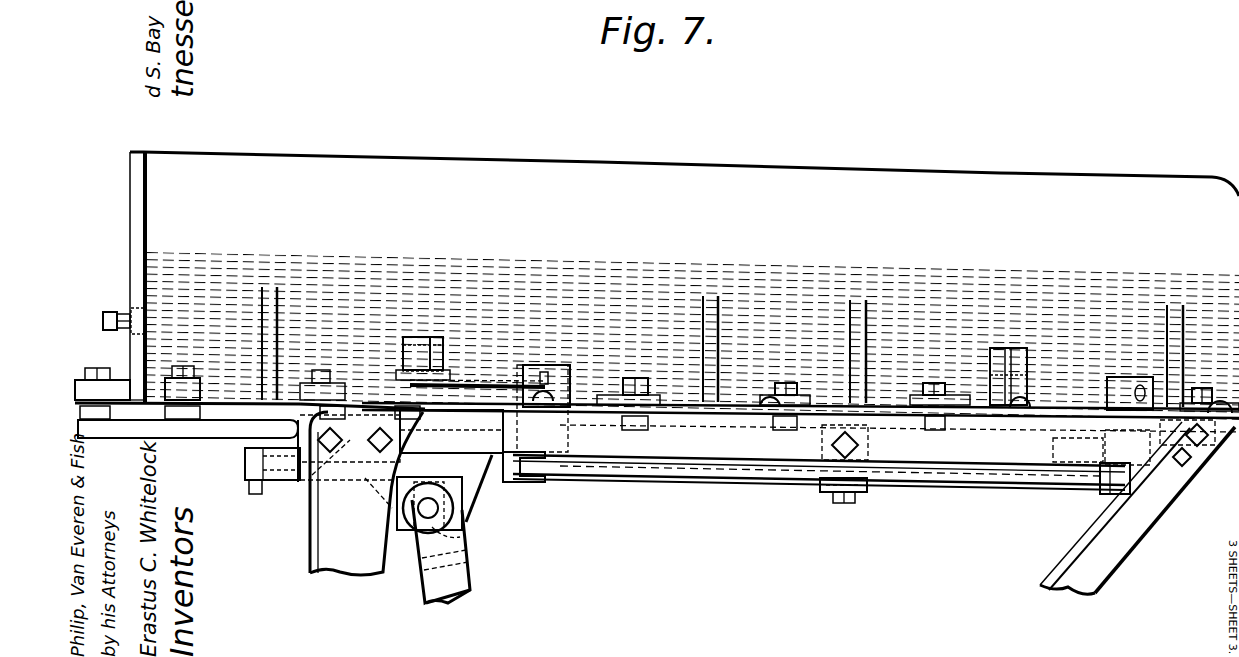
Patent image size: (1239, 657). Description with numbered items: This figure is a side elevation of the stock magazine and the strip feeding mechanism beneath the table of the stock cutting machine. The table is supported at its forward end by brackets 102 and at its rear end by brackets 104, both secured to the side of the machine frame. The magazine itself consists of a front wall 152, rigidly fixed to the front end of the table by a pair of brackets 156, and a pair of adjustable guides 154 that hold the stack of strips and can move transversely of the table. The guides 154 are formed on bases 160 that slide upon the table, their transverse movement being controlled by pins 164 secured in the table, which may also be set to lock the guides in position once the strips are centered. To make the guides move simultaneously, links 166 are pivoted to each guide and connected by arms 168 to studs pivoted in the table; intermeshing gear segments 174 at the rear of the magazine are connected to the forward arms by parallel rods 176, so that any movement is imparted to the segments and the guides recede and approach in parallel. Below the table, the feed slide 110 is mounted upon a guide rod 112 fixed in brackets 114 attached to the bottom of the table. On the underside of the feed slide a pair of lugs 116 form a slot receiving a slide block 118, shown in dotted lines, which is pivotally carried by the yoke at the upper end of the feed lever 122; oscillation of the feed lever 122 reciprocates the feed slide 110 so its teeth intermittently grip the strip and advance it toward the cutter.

The brackets 102 is at (401, 492).
The brackets 104 is at (1137, 497).
The feed slide 110 is at (200, 431).
The guide rod 112 is at (686, 475).
The brackets 114 is at (255, 460).
The lugs 116 is at (462, 500).
The slide block 118 is at (440, 530).
The feed lever 122 is at (462, 580).
The front wall 152 is at (137, 191).
The adjustable guides 154 is at (684, 286).
The brackets 156 is at (128, 312).
The bases 160 is at (742, 399).
The pins 164 is at (925, 402).
The links 166 is at (435, 340).
The arms 168 is at (468, 378).
The gear segments 174 is at (1057, 448).
The parallel rods 176 is at (940, 473).